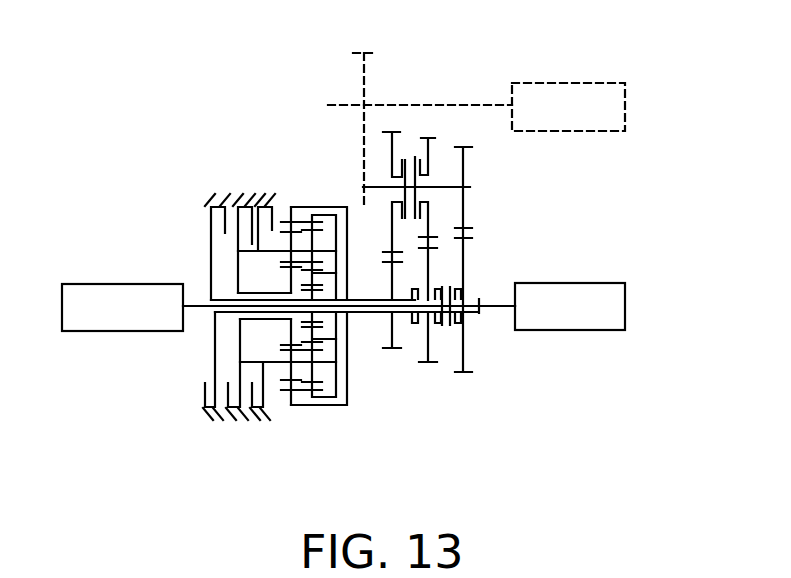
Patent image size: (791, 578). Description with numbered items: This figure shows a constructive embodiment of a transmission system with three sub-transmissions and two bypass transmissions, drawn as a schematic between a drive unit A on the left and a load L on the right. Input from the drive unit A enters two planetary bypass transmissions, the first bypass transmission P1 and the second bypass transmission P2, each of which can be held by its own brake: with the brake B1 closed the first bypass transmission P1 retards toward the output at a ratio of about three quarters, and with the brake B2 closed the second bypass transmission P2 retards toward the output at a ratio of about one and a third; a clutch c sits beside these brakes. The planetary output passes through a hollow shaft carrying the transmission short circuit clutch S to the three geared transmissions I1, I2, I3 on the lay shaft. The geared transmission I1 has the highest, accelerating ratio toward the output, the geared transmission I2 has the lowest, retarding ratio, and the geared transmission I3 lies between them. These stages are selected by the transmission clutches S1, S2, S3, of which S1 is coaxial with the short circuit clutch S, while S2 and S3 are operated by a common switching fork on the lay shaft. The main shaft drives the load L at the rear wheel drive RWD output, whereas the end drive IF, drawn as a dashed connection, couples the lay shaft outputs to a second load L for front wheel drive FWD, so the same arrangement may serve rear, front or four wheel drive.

The drive unit (engine/motor) A is at (122, 307).
The load (driven wheels) L is at (568, 206).
The front wheel drive FWD is at (456, 74).
The rear wheel drive RWD is at (537, 276).
The end drive IF is at (346, 129).
The brake B1 is at (208, 200).
The brake B2 is at (242, 195).
The clutch c is at (266, 198).
The first bypass transmission P1 is at (318, 390).
The second bypass transmission P2 is at (288, 402).
The transmission short circuit clutch S is at (415, 335).
The transmission clutch S1 is at (453, 330).
The transmission clutch S2 is at (407, 140).
The third synchronizer S3 is at (416, 140).
The geared transmission I1 is at (463, 274).
The geared transmission I2 is at (392, 320).
The geared transmission I3 is at (428, 316).